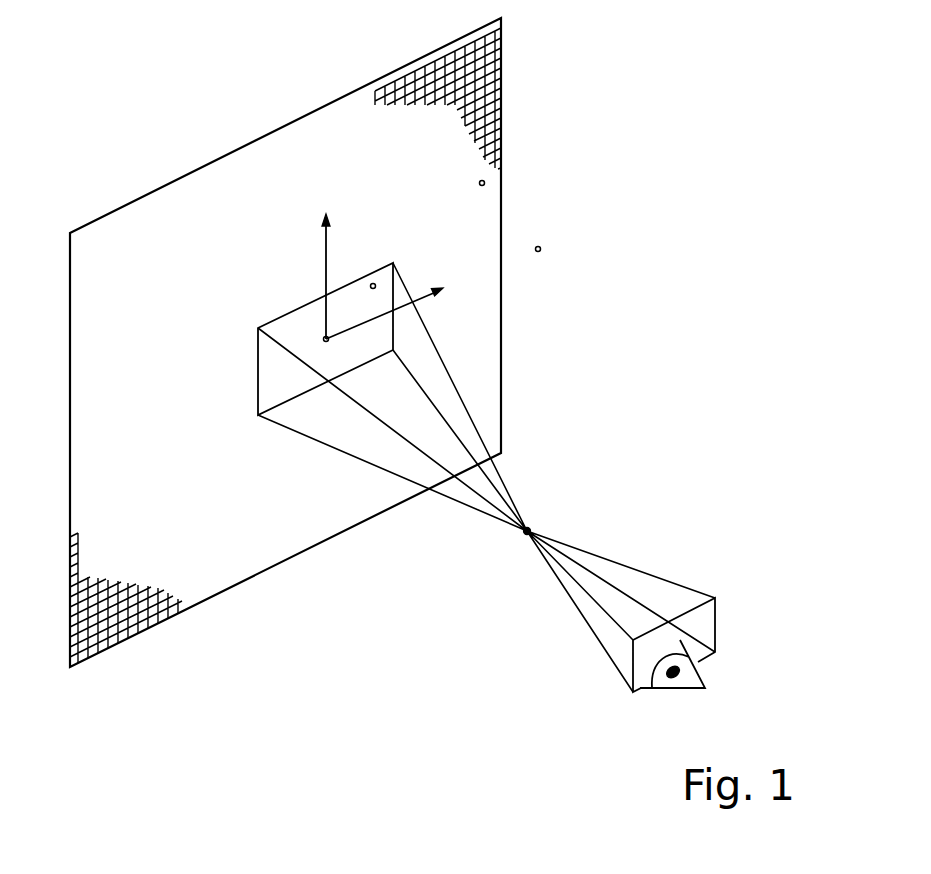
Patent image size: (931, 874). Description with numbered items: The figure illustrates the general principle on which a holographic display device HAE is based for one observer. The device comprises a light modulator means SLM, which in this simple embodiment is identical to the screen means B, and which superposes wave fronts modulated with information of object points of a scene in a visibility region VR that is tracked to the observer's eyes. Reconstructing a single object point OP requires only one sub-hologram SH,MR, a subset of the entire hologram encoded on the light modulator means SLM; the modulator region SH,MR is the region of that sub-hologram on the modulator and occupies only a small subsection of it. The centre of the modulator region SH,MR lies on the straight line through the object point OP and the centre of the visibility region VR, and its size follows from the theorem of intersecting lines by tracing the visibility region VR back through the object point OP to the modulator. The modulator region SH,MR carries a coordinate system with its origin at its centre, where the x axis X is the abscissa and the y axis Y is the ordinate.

The light modulator means SLM is at (285, 342).
The screen means B is at (484, 181).
The holographic display device HAE is at (540, 247).
The sub-hologram / modulator region SH,MR is at (375, 284).
The x axis X is at (387, 313).
The y axis Y is at (335, 278).
The object point OP is at (531, 529).
The visibility region VR is at (709, 611).